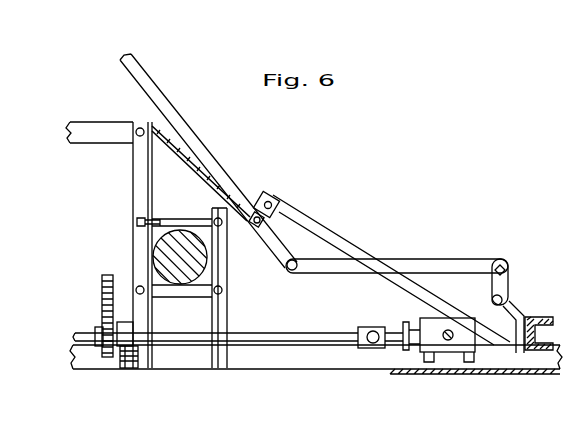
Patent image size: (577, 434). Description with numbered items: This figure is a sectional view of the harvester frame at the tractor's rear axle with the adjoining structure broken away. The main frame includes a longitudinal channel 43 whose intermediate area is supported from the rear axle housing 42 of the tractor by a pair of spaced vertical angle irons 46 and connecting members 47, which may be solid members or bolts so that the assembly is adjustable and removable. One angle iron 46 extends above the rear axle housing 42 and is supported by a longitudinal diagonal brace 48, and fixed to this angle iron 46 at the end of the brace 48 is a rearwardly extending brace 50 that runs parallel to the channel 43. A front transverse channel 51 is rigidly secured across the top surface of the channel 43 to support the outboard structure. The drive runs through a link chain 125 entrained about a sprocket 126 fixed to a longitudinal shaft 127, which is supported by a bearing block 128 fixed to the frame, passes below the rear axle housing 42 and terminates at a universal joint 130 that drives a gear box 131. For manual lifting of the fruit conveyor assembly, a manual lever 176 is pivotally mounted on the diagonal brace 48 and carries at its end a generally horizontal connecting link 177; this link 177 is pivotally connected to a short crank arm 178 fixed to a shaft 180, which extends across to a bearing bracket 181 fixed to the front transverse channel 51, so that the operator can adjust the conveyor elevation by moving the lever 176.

The longitudinal channel 43 is at (368, 371).
The rearwardly extending brace 50 is at (98, 122).
The vertical angle iron 46 is at (133, 226).
The connecting member 47 is at (194, 220).
The rear axle housing 42 is at (163, 227).
The manual lever 176 is at (181, 116).
The longitudinal diagonal brace 48 is at (328, 234).
The connecting link 177 is at (456, 259).
The short crank arm 178 is at (510, 276).
The shaft 180 is at (506, 300).
The bearing bracket 181 is at (524, 314).
The front transverse channel 51 is at (536, 333).
The longitudinal shaft 127 is at (273, 332).
The link chain 125 is at (102, 296).
The sprocket 126 is at (98, 348).
The bearing block 128 is at (137, 358).
The universal joint 130 is at (375, 327).
The gear box 131 is at (452, 336).